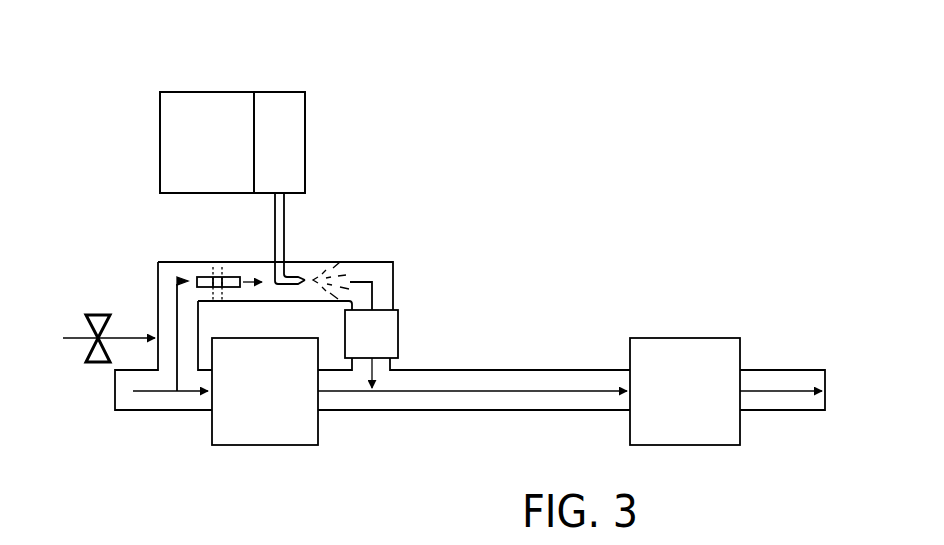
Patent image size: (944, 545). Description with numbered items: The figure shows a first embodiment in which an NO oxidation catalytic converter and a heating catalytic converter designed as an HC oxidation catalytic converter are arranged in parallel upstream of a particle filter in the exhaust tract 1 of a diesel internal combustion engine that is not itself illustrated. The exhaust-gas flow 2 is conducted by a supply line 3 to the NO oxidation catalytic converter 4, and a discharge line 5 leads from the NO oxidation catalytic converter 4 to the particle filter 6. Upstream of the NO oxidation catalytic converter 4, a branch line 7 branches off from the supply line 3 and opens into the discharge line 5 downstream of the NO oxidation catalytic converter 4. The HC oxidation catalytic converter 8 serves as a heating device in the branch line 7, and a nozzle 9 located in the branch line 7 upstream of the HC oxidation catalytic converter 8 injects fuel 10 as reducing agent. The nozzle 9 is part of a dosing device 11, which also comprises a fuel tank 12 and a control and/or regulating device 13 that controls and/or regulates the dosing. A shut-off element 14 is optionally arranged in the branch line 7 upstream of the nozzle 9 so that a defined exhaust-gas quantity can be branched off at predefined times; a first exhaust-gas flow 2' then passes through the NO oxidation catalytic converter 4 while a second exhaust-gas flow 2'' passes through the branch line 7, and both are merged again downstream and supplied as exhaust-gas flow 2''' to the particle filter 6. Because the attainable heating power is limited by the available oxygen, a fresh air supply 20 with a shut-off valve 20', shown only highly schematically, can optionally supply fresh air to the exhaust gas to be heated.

The exhaust tract 1 is at (575, 142).
The exhaust-gas flow 2 is at (170, 436).
The first exhaust-gas flow 2' is at (190, 446).
The second exhaust-gas flow 2'' is at (142, 325).
The exhaust-gas flow 2''' is at (522, 351).
The supply line 3 is at (123, 407).
The NO oxidation catalytic converter 4 is at (267, 435).
The discharge line 5 is at (448, 412).
The particle filter 6 is at (705, 338).
The branch line 7 is at (226, 262).
The HC oxidation catalytic converter 8 is at (375, 331).
The nozzle 9 is at (296, 278).
The fuel 10 is at (327, 271).
The dosing device 11 is at (297, 66).
The fuel tank 12 is at (200, 110).
The control and/or regulating device 13 is at (287, 158).
The shut-off element 14 is at (198, 278).
The fresh air supply 20 is at (87, 318).
The shut-off valve 20' is at (49, 369).